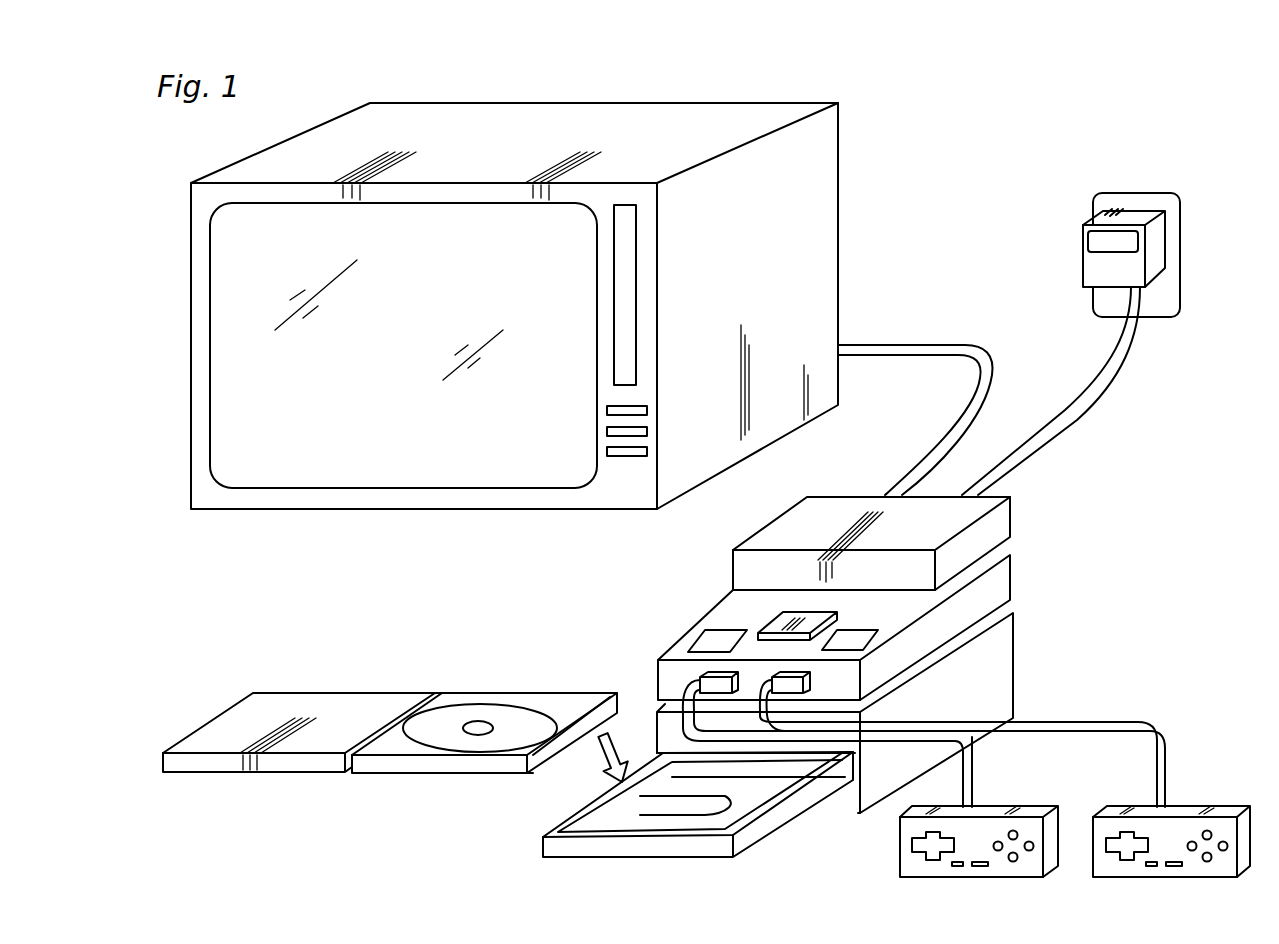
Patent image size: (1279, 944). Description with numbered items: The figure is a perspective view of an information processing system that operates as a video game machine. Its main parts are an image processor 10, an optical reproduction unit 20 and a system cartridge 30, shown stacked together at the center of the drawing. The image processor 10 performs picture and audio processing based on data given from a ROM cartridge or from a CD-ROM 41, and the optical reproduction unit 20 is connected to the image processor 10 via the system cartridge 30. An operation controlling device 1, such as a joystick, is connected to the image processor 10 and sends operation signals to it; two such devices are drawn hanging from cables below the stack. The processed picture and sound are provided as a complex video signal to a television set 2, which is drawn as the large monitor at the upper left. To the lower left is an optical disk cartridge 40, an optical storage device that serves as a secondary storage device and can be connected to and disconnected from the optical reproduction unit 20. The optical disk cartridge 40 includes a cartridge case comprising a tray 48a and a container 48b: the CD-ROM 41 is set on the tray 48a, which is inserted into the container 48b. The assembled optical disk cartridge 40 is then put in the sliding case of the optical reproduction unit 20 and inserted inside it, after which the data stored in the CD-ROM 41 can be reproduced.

The operation controlling device 1 is at (1023, 807).
The television set 2 is at (838, 167).
The image processor 10 is at (1012, 563).
The optical reproduction unit 20 is at (1013, 653).
The system cartridge 30 is at (828, 497).
The optical disk cartridge 40 is at (390, 705).
The CD-ROM 41 is at (517, 720).
The tray 48a is at (483, 697).
The container 48b is at (322, 692).